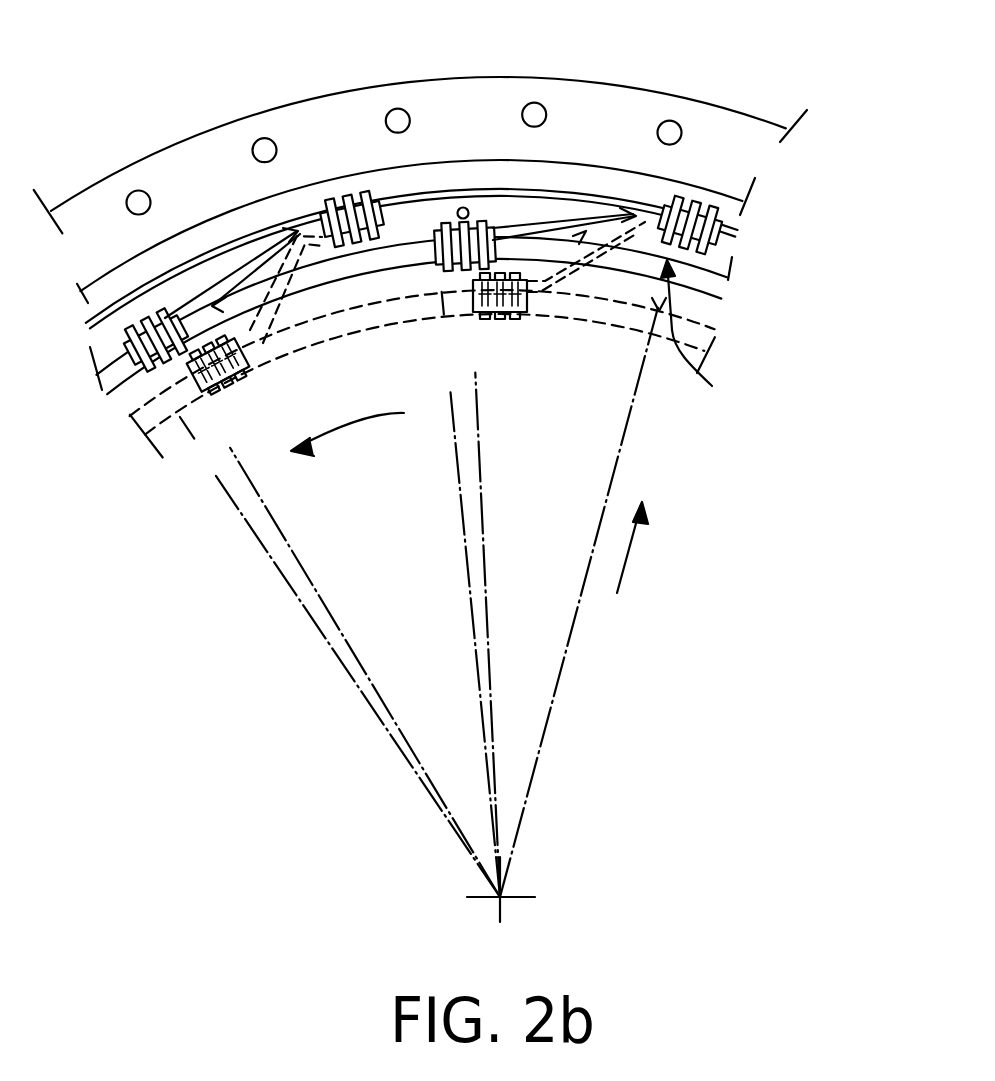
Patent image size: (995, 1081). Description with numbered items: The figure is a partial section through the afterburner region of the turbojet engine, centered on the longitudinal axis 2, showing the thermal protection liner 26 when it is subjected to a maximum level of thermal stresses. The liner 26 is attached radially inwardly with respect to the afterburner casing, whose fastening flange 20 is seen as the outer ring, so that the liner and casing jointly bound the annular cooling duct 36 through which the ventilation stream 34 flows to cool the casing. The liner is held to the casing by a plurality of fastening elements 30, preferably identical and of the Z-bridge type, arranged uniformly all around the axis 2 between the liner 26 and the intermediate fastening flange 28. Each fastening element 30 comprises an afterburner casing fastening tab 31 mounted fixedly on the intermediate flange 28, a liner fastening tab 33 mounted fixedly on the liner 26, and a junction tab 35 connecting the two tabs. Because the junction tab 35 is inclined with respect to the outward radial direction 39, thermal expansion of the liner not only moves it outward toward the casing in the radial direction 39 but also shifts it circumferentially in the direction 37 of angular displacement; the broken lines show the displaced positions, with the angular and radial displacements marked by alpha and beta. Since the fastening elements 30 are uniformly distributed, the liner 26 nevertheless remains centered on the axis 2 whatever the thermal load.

The axis 2 is at (503, 893).
The fastening flange 20 is at (784, 144).
The thermal protection liner 26 is at (746, 290).
The intermediate fastening flange 28 is at (750, 237).
The fastening elements 30 is at (343, 330).
The afterburner casing fastening tab 31 is at (352, 196).
The liner fastening tab 33 is at (148, 328).
The ventilation stream 34 is at (463, 207).
The junction tab 35 is at (240, 270).
The annular cooling duct 36 is at (425, 243).
The direction of angular displacement 37 is at (362, 427).
The outward radial direction 39 is at (627, 557).